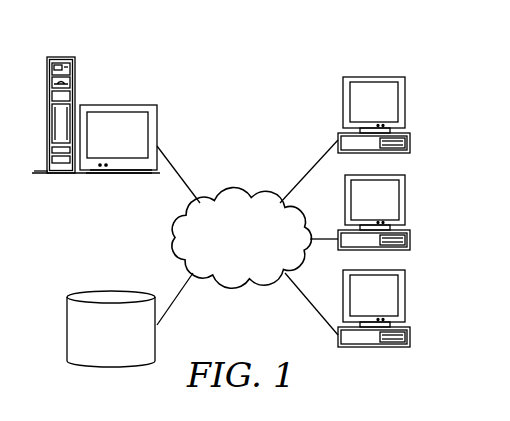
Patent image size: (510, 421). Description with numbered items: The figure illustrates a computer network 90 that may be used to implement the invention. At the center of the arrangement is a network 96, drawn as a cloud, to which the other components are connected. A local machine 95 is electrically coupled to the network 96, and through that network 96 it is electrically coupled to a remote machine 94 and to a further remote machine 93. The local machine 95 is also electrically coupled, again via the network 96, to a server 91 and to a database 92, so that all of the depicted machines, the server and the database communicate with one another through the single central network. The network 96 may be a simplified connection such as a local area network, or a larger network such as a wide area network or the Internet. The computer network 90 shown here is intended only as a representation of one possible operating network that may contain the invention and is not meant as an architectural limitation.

The computer network 90 is at (304, 72).
The server 91 is at (77, 80).
The database 92 is at (122, 345).
The remote machine 93 is at (405, 298).
The remote machine 94 is at (405, 200).
The local machine 95 is at (405, 103).
The network 96 is at (257, 256).